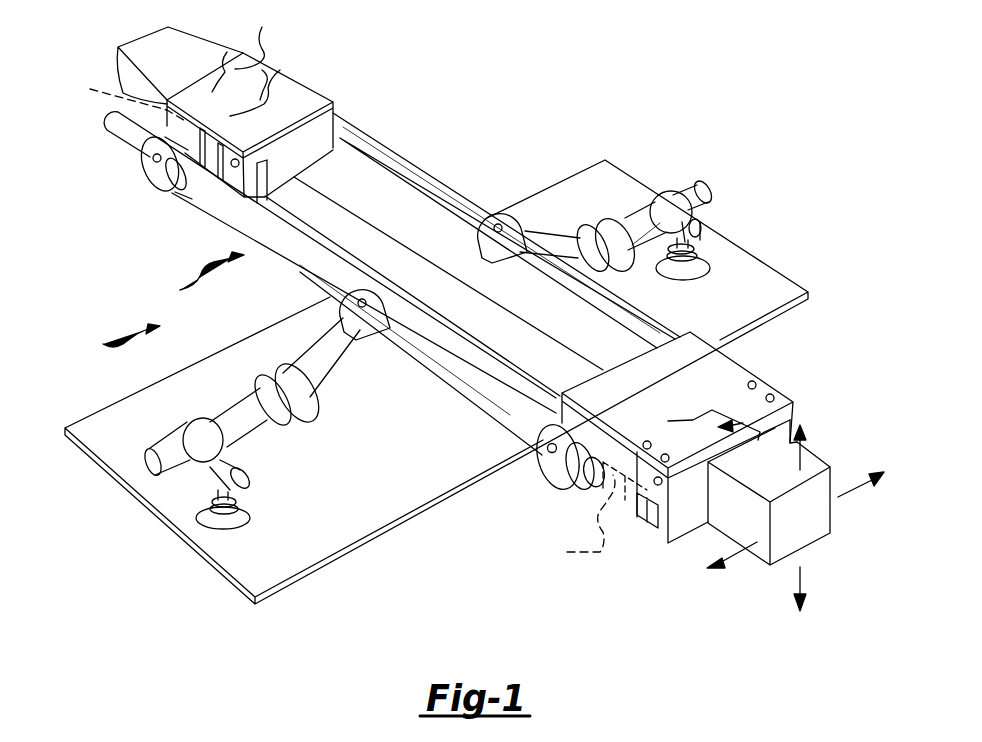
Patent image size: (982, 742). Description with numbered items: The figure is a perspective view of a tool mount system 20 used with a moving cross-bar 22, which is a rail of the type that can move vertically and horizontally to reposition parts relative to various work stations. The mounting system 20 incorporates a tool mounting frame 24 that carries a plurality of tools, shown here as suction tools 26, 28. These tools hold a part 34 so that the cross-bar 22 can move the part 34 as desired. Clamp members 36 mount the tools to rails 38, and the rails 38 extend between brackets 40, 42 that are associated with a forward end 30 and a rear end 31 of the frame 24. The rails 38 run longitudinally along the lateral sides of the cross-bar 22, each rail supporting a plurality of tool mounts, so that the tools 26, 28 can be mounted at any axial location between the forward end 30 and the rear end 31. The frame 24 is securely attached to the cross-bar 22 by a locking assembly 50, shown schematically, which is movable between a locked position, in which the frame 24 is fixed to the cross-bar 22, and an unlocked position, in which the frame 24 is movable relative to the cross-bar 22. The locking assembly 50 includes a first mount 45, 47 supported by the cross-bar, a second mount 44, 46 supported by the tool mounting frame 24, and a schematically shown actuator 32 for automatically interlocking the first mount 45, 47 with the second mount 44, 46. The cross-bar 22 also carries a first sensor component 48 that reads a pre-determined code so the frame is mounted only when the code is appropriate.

The tool mount system 20 is at (119, 341).
The cross-bar 22 is at (783, 543).
The tool mounting frame 24 is at (198, 277).
The suction tool 26 is at (237, 521).
The suction tool 28 is at (696, 267).
The forward end 30 is at (733, 403).
The rear end 31 is at (210, 92).
The actuator 32 is at (218, 174).
The part 34 is at (414, 462).
The clamp member 36 is at (368, 332).
The rail 38 is at (414, 178).
The bracket 40 is at (538, 468).
The bracket 42 is at (150, 174).
The second mount 44 is at (662, 397).
The first mount 45 is at (788, 415).
The second mount 46 is at (262, 27).
The first mount 47 is at (300, 106).
The first sensor component 48 is at (291, 68).
The locking assembly 50 is at (338, 322).